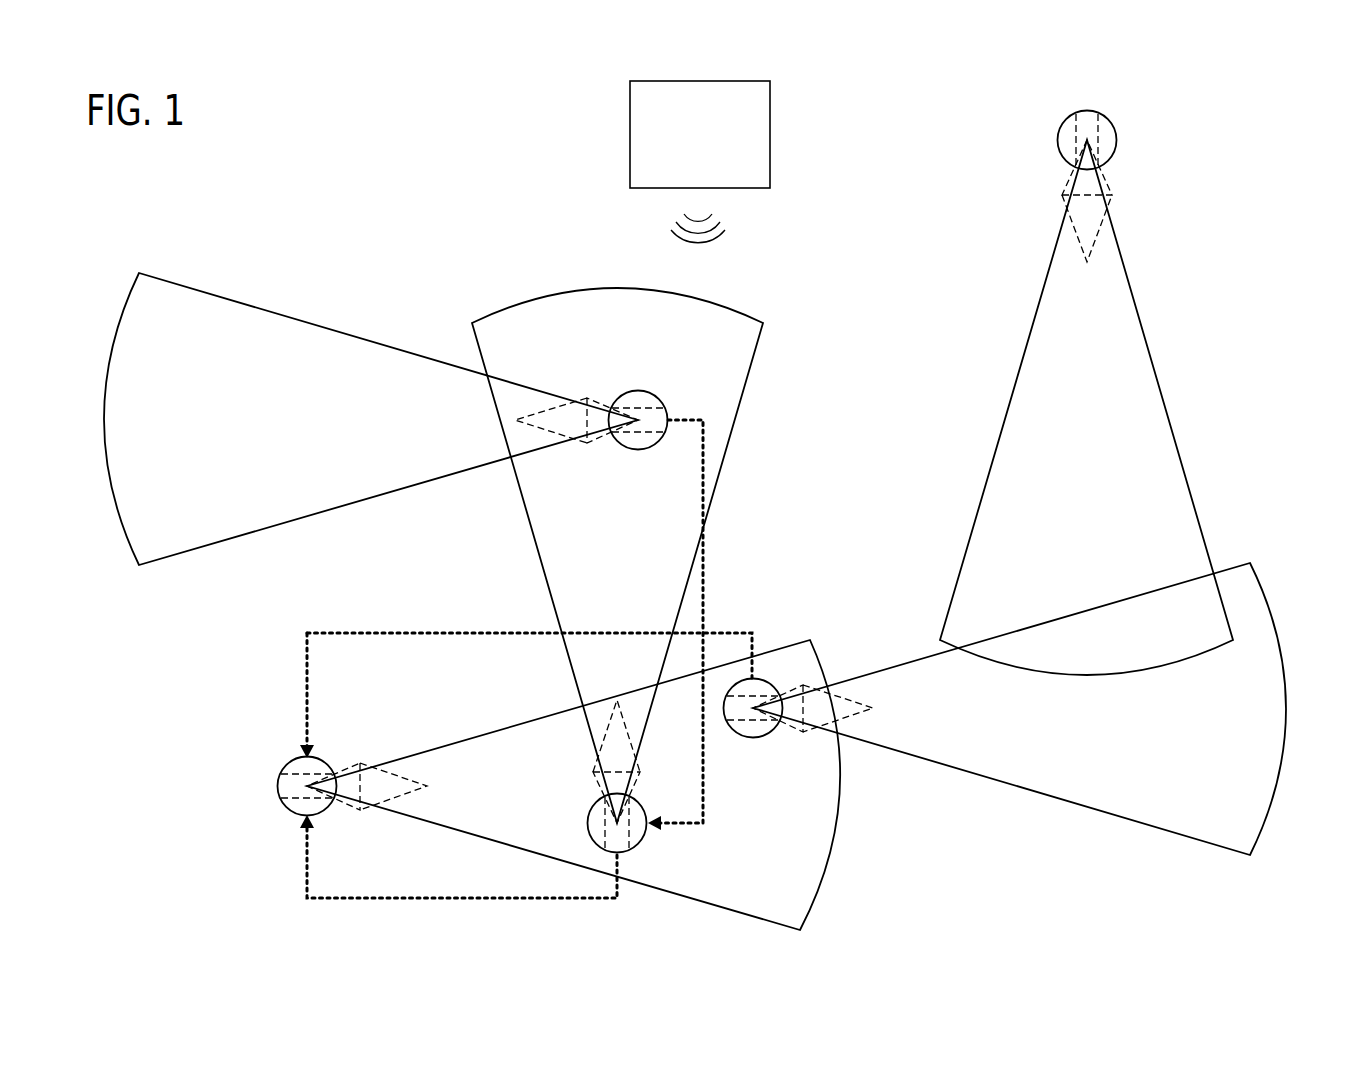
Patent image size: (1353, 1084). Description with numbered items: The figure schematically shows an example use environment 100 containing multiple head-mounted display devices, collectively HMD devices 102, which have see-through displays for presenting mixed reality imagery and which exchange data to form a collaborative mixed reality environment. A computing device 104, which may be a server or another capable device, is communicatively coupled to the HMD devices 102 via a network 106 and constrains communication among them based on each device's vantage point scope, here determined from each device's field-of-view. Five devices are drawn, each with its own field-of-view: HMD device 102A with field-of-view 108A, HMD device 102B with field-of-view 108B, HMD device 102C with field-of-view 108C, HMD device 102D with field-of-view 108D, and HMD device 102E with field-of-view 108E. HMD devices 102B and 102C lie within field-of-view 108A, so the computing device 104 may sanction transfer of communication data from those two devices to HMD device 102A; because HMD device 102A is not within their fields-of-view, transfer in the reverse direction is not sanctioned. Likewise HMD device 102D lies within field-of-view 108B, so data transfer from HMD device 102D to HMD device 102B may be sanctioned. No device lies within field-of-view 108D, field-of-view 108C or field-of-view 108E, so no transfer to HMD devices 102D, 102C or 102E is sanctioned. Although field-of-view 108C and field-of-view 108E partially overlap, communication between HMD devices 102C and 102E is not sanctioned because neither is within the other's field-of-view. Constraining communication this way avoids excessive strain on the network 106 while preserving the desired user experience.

The use environment 100 is at (909, 112).
The HMD devices 102 is at (421, 190).
The computing device 104 is at (700, 134).
The network 106 is at (746, 229).
The HMD device 102A is at (285, 766).
The HMD device 102B is at (642, 843).
The HMD device 102C is at (752, 738).
The HMD device 102D is at (642, 392).
The HMD device 102E is at (1110, 122).
The field-of-view 108A is at (503, 729).
The field-of-view 108B is at (757, 358).
The field-of-view 108C is at (1249, 575).
The field-of-view 108D is at (222, 297).
The field-of-view 108E is at (1177, 448).